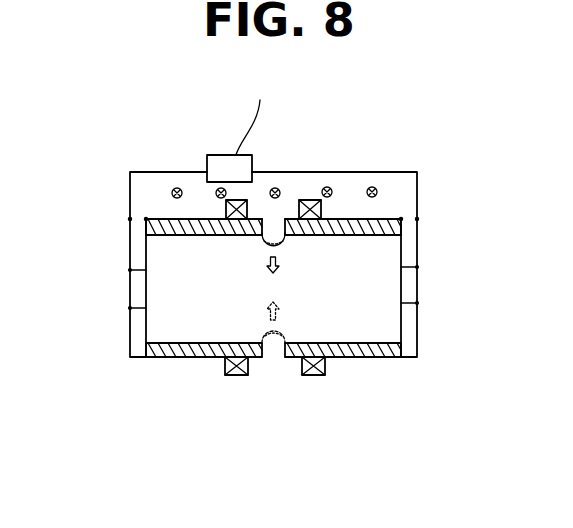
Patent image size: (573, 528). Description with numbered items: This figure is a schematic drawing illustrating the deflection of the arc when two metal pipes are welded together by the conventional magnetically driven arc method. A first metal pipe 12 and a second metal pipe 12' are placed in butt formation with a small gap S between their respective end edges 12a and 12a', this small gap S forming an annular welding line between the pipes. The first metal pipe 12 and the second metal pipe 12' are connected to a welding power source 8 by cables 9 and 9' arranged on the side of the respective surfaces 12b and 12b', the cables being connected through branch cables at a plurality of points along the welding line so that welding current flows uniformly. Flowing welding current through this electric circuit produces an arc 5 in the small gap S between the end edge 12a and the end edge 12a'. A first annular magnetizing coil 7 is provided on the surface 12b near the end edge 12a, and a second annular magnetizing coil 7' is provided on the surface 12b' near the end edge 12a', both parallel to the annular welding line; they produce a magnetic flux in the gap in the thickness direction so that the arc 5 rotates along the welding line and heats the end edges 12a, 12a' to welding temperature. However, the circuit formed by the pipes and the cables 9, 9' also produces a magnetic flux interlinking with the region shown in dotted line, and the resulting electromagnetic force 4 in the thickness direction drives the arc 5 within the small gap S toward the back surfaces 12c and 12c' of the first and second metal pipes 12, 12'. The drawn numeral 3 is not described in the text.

The housing / yoke 3 is at (378, 192).
The electromagnetic force 4 is at (266, 263).
The arc 5 is at (284, 246).
The first annular magnetizing coil 7 is at (324, 255).
The second annular magnetizing coil 7' is at (256, 256).
The welding power source 8 is at (225, 155).
The cable 9 is at (320, 140).
The cable 9' is at (163, 140).
The first metal pipe 12 is at (347, 327).
The second metal pipe 12' is at (204, 328).
The end edge 12a is at (340, 387).
The end edge 12a' is at (210, 387).
The surface 12b is at (343, 176).
The surface 12b' is at (173, 203).
The back surface 12c is at (381, 247).
The back surface 12c' is at (173, 251).
The small gap S is at (272, 283).